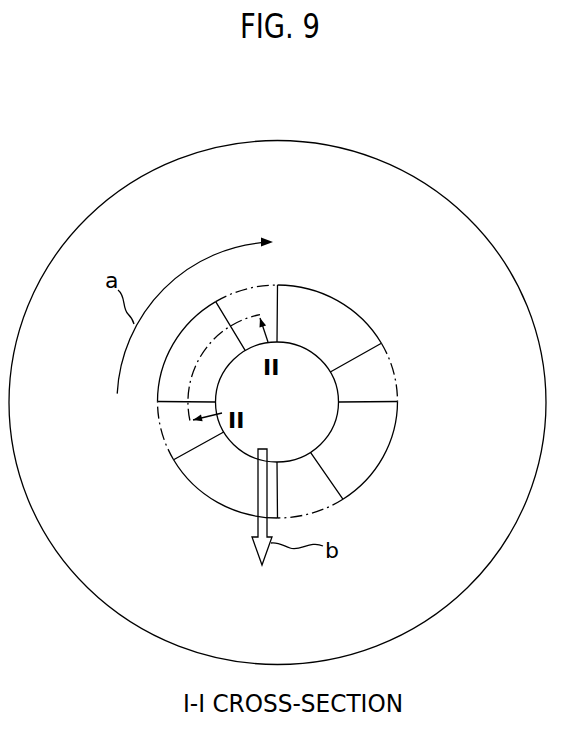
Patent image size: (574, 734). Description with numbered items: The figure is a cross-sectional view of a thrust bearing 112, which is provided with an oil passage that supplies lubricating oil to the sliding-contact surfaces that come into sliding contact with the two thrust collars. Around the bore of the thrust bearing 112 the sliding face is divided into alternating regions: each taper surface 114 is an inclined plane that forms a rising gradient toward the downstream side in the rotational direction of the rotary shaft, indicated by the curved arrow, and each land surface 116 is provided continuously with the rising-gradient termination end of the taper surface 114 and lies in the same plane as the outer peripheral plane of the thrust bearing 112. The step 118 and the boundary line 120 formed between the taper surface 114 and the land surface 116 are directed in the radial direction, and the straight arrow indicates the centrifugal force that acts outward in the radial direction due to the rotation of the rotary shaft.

The thrust bearing 112 is at (180, 151).
The taper surface 114 is at (182, 364).
The land surface 116 is at (253, 310).
The step 118 is at (172, 403).
The boundary line 120 is at (234, 318).